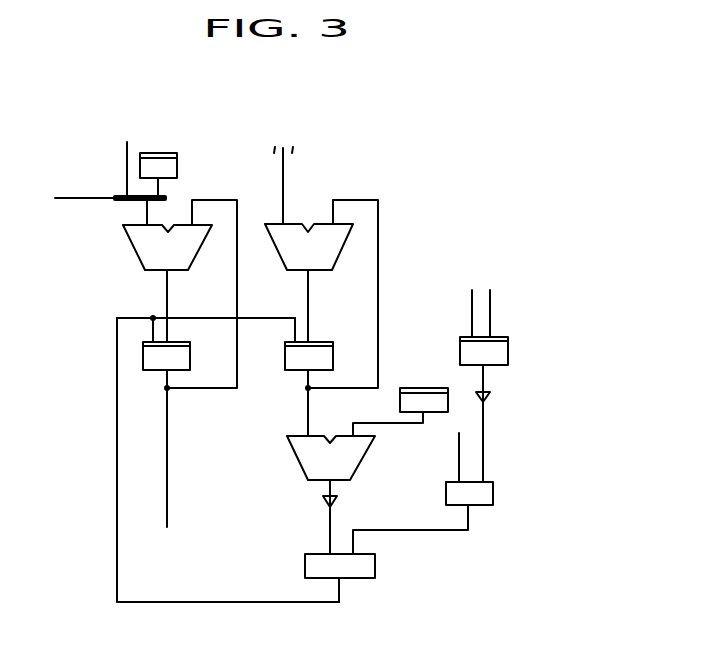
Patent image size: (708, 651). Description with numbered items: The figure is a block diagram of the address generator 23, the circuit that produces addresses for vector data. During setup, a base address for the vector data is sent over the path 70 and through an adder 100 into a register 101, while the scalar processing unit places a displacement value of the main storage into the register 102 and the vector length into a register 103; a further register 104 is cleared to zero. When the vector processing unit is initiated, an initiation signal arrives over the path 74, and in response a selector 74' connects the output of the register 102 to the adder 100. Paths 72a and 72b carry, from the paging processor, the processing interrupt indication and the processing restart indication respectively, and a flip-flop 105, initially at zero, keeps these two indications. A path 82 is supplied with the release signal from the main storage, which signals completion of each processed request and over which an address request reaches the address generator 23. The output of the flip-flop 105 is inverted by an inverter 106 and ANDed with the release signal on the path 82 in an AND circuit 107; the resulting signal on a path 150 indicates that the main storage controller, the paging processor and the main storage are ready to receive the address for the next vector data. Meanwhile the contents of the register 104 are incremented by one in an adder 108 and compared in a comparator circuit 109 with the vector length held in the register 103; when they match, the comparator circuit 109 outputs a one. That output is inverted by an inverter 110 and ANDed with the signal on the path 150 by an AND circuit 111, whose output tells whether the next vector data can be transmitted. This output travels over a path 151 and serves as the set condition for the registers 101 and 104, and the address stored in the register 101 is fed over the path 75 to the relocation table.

The address generator 23 is at (306, 335).
The path 70 is at (124, 179).
The path 74 is at (74, 179).
The selector 74' is at (175, 194).
The register 102 is at (177, 163).
The adder 100 is at (135, 258).
The register 101 is at (143, 355).
The path 75 is at (168, 481).
The path 151 is at (210, 600).
The adder 108 is at (340, 253).
The register 104 is at (292, 372).
The register 103 is at (422, 388).
The path 72a is at (469, 327).
The path 72b is at (493, 317).
The flip-flop 105 is at (508, 352).
The inverter 106 is at (490, 396).
The path 82 is at (457, 466).
The AND circuit 107 is at (493, 490).
The path 150 is at (394, 528).
The comparator circuit 109 is at (300, 465).
The inverter 110 is at (323, 502).
The AND circuit 111 is at (375, 563).